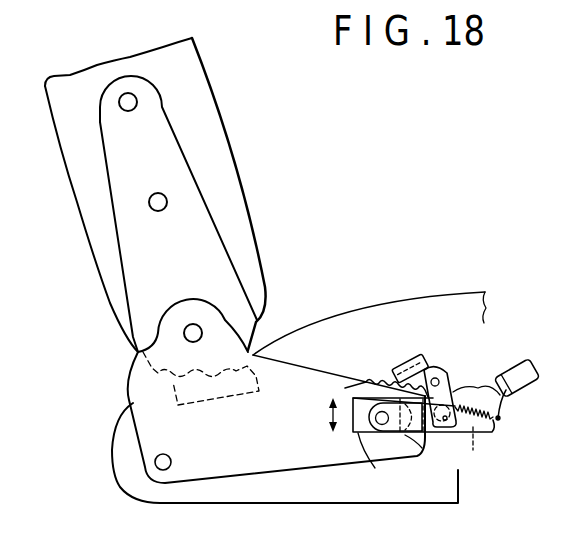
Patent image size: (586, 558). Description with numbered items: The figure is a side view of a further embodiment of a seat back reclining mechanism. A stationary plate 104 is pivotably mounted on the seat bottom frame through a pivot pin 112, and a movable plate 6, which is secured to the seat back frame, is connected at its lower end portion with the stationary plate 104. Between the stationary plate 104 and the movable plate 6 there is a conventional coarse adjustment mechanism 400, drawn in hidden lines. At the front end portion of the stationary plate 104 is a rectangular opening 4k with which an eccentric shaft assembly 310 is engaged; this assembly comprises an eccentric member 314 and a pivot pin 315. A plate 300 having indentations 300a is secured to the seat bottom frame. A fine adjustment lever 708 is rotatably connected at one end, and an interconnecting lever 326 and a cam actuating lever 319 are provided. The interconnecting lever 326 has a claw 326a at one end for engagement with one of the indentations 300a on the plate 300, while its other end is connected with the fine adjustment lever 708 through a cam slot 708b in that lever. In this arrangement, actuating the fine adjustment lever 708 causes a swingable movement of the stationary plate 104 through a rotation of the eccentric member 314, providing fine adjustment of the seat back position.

The movable plate 6 is at (207, 222).
The pivot pin 112 is at (155, 462).
The stationary plate 104 is at (237, 463).
The coarse adjustment mechanism 400 is at (158, 382).
The eccentric shaft assembly 310 is at (354, 421).
The plate 300 is at (373, 379).
The indentations 300a is at (393, 379).
The rectangular opening 4k is at (353, 398).
The claw 326a is at (403, 360).
The cam actuating lever 319 is at (447, 390).
The interconnecting lever 326 is at (500, 417).
The fine adjustment lever 708 is at (482, 421).
The cam slot 708b is at (465, 422).
The eccentric member 314 is at (375, 468).
The pivot pin 315 is at (424, 444).